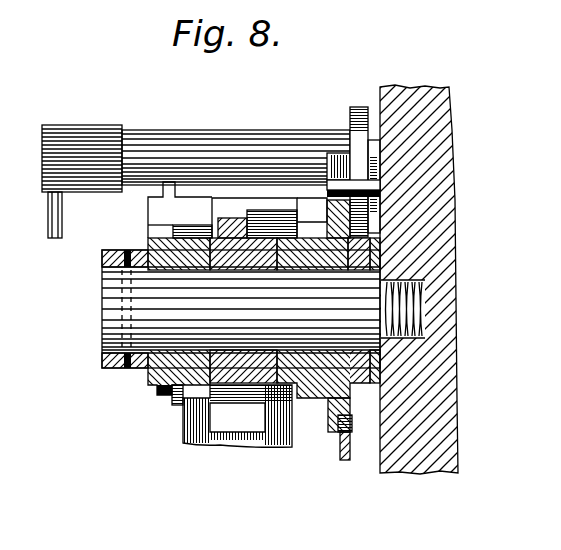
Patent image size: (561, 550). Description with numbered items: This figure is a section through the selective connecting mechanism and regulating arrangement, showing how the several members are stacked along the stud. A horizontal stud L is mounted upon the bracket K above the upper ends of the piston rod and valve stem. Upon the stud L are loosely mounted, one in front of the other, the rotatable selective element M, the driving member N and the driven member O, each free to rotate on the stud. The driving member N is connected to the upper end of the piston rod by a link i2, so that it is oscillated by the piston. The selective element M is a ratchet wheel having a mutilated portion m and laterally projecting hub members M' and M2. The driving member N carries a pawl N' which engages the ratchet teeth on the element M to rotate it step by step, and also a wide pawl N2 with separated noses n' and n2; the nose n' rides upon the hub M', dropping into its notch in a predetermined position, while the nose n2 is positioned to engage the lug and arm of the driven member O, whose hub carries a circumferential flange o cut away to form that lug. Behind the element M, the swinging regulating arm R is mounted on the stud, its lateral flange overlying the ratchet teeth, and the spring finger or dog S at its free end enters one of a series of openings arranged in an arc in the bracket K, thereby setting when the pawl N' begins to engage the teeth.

The bracket K is at (450, 268).
The wide pawl N2 is at (222, 133).
The pawl N' is at (321, 130).
The swinging arm R is at (360, 108).
The spring finger or dog S is at (377, 157).
The nose n2 is at (152, 208).
The driving member N is at (250, 252).
The nose n' is at (312, 212).
The hub member M2 is at (297, 257).
The stud L is at (108, 288).
The driven member O is at (157, 370).
The flange o is at (177, 405).
The hub member M' is at (328, 391).
The rotatable selective element M is at (313, 440).
The mutilated portion m is at (333, 433).
The link i2 is at (200, 437).